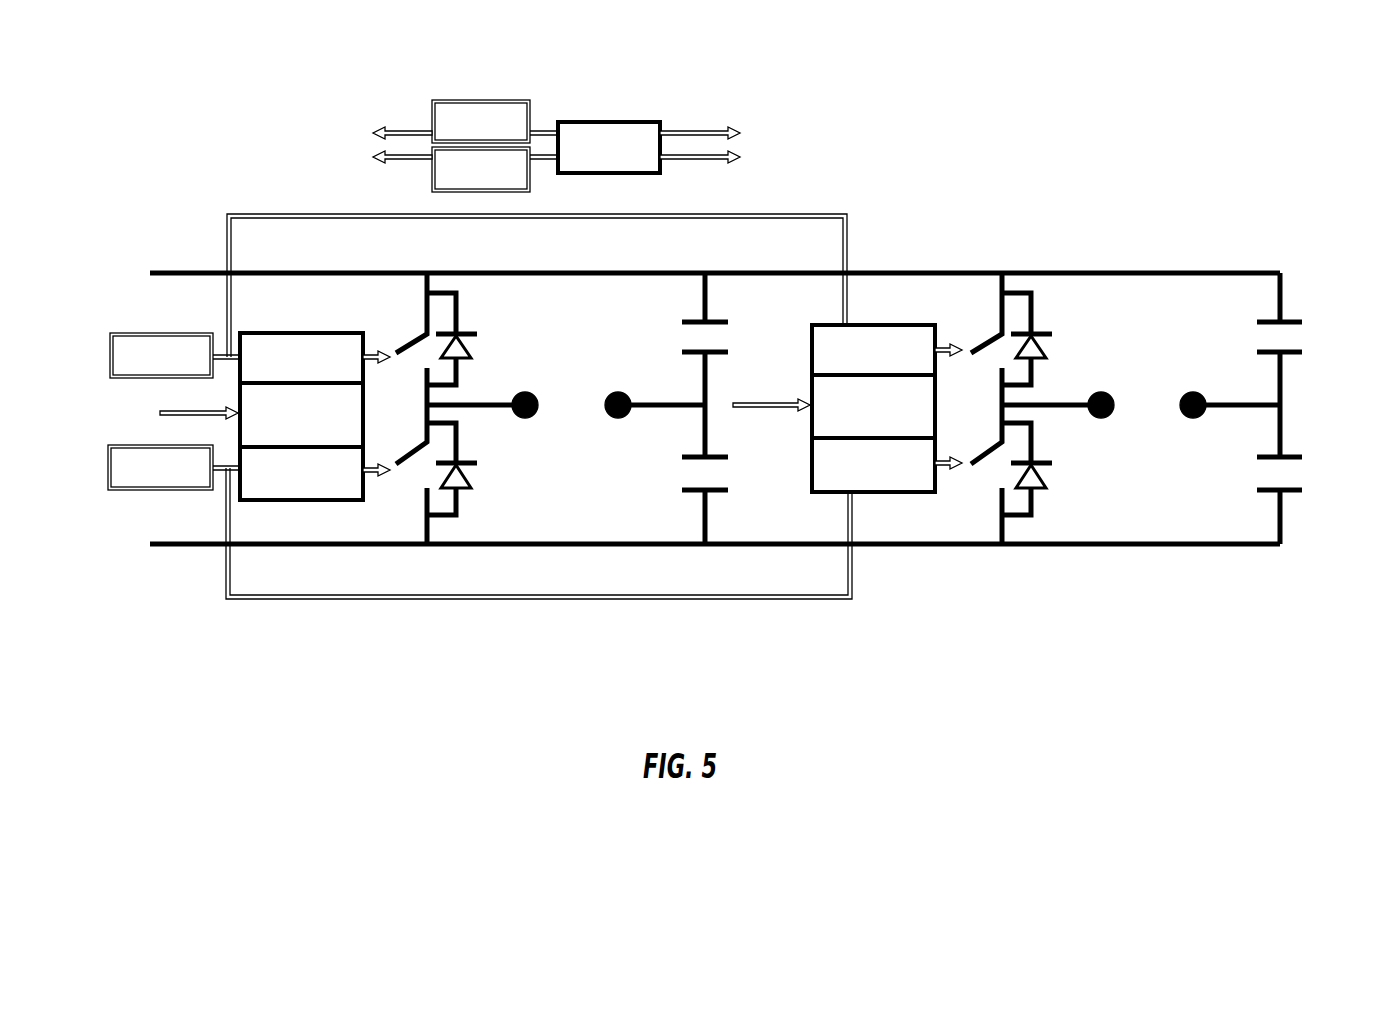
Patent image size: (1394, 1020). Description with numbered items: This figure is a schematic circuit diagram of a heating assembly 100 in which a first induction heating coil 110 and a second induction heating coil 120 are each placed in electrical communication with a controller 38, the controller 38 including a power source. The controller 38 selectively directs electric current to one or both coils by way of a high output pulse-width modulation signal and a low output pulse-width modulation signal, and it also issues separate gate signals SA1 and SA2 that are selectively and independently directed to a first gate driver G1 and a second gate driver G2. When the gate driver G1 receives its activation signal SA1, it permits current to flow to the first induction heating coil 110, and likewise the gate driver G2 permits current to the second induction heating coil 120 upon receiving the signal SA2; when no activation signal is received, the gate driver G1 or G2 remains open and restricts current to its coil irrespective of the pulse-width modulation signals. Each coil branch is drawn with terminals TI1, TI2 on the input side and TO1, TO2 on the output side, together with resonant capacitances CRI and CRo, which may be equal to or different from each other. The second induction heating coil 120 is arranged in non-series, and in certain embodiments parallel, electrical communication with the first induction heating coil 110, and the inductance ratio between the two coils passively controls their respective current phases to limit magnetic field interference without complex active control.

The controller 38 is at (571, 144).
The gate signal SA1 is at (703, 131).
The gate signal SA2 is at (703, 159).
The power converter 100 is at (730, 495).
The first induction heating coil 110 is at (508, 474).
The second induction heating coil 120 is at (1042, 407).
The first gate driver G1 is at (341, 500).
The second gate driver G2 is at (910, 493).
The first input terminal TI1 is at (528, 430).
The second input terminal TI2 is at (655, 430).
The first output terminal TO1 is at (1109, 430).
The second output terminal TO2 is at (1230, 430).
The resonant capacitance CRI is at (729, 408).
The resonant capacitance CRo is at (1304, 408).